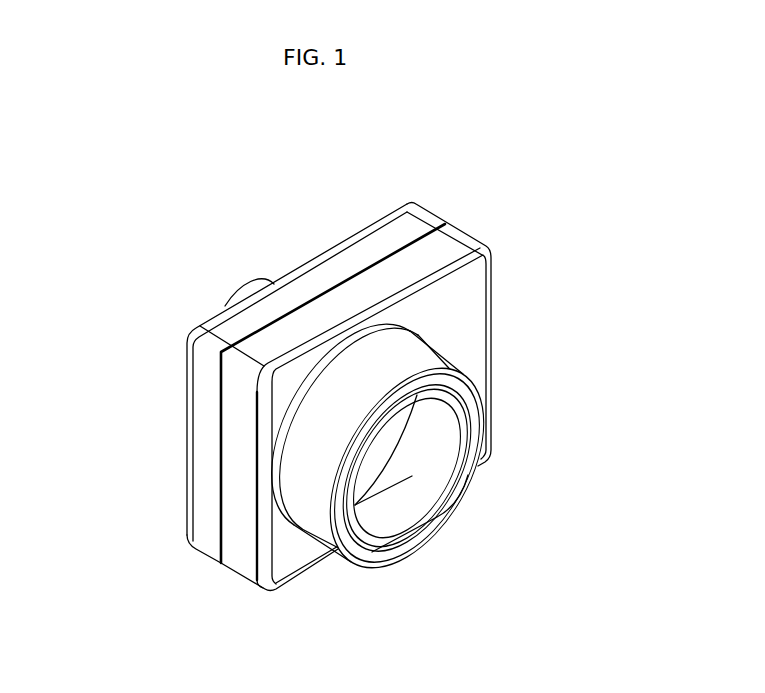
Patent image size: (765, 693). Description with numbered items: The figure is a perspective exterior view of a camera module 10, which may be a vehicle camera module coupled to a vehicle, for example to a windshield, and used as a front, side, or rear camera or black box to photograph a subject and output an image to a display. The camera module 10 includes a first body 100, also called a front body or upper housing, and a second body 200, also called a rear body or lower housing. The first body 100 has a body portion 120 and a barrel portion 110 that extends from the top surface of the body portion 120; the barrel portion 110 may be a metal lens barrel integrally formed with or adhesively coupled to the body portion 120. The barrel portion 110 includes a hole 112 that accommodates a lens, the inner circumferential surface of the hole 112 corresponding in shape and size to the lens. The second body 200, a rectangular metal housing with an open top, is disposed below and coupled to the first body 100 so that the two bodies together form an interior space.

The camera module 10 is at (162, 168).
The first body 100 is at (493, 321).
The barrel portion 110 is at (317, 527).
The hole 112 is at (413, 470).
The body portion 120 is at (446, 248).
The second body 200 is at (428, 201).